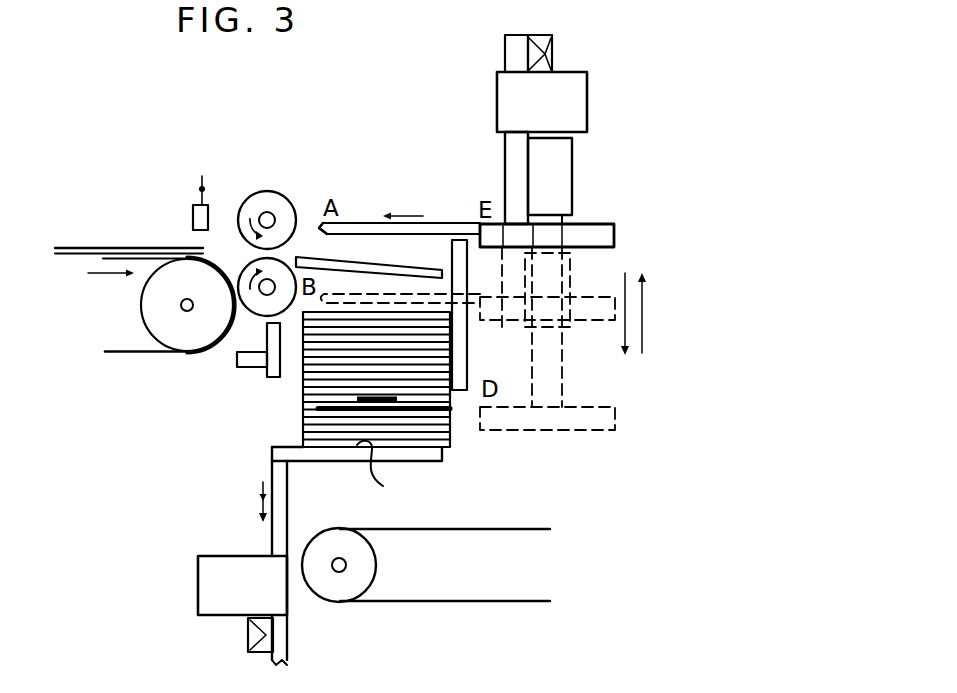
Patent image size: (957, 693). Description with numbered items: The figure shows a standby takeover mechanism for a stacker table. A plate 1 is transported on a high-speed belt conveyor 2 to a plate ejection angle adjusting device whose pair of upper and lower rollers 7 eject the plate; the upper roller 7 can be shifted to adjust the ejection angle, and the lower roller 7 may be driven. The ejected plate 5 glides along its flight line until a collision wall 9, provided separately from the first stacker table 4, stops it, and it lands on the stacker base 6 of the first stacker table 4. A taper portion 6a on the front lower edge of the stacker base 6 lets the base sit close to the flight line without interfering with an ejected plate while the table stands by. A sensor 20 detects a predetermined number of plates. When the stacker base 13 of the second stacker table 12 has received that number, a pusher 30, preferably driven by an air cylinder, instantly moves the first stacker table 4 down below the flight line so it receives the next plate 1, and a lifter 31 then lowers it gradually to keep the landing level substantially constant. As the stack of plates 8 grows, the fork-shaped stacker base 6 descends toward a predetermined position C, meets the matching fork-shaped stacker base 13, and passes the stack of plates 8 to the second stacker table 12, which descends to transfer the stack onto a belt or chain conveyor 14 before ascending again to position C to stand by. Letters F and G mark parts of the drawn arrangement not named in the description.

The plate 1 is at (74, 247).
The high-speed belt conveyor 2 is at (115, 352).
The first stacker table 4 is at (607, 235).
The plate 5 is at (358, 266).
The stacker base 6 is at (450, 222).
The taper portion 6a is at (326, 232).
The upper and lower rollers 7 is at (264, 208).
The stack of plates 8 is at (445, 425).
The collision wall 9 is at (458, 350).
The second stacker table 12 is at (272, 452).
The stacker base 13 is at (384, 474).
The belt or chain conveyor 14 is at (492, 529).
The sensor 20 is at (193, 215).
The pusher 30 is at (562, 168).
The lifter 31 is at (577, 97).
The predetermined position C is at (303, 410).
The bracket F is at (263, 386).
The lifting unit G is at (262, 543).